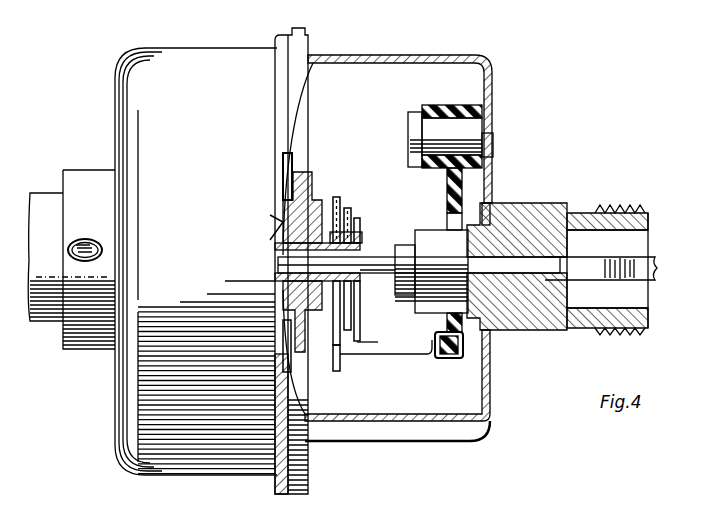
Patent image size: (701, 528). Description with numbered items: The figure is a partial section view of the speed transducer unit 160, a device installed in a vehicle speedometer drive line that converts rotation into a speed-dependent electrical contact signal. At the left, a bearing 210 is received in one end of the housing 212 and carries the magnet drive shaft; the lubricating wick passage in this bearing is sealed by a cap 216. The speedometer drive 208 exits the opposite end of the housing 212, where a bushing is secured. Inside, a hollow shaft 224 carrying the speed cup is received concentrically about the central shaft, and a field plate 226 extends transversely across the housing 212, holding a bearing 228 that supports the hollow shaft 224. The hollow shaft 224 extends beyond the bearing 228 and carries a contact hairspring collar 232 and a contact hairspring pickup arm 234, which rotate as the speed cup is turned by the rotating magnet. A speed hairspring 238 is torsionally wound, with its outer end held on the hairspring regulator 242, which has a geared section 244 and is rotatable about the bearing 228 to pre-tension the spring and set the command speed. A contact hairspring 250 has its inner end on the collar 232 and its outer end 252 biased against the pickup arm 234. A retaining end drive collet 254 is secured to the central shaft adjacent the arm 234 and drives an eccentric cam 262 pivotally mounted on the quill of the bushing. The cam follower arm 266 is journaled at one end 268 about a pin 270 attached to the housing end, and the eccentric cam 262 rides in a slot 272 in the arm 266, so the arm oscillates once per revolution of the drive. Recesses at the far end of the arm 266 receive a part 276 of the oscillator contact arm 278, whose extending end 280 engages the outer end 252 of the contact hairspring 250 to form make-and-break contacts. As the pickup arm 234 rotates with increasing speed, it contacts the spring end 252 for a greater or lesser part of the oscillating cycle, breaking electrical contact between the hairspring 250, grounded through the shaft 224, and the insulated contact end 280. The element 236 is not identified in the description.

The speed transducer unit 160 is at (495, 78).
The speedometer drive 208 is at (565, 247).
The bearing 210 is at (76, 173).
The housing 212 is at (112, 70).
The cap 216 is at (98, 226).
The hollow shaft 224 is at (280, 263).
The field plate 226 is at (284, 215).
The bearing 228 is at (283, 240).
The contact hairspring collar 232 is at (352, 240).
The contact hairspring pickup arm 234 is at (372, 342).
The bearing block 236 is at (540, 203).
The speed hairspring 238 is at (352, 210).
The hairspring regulator 242 is at (310, 190).
The geared section 244 is at (292, 165).
The contact hairspring 250 is at (341, 215).
The outer end of contact hairspring 252 is at (352, 373).
The retaining end drive collet 254 is at (403, 275).
The eccentric cam 262 is at (486, 197).
The cam follower arm 266 is at (448, 190).
The journaled end 268 is at (434, 108).
The pin 270 is at (410, 126).
The slot 272 is at (448, 222).
The part of oscillator arm 276 is at (440, 352).
The oscillator contact arm 278 is at (407, 356).
The extending end 280 is at (314, 360).